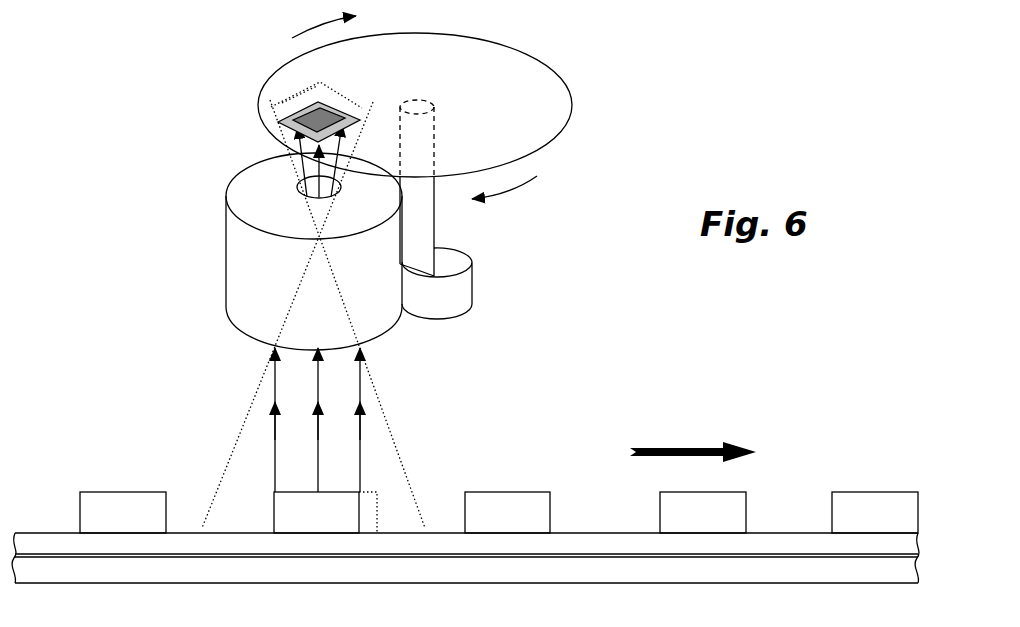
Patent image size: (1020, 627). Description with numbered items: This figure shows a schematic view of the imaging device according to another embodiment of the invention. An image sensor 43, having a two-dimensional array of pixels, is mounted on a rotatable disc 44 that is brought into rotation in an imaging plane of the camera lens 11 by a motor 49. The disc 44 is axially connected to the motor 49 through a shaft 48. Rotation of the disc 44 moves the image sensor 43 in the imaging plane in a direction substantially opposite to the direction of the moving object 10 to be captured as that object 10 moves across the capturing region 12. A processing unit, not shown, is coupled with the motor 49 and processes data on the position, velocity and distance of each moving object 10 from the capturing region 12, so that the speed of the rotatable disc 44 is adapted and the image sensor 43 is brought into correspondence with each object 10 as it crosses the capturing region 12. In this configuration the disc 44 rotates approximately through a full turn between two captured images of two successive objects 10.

The moving object 10 is at (334, 495).
The camera lens 11 is at (250, 267).
The capturing region 12 is at (232, 460).
The image sensor 43 is at (280, 100).
The rotatable disc 44 is at (527, 118).
The shaft 48 is at (430, 218).
The motor 49 is at (457, 297).